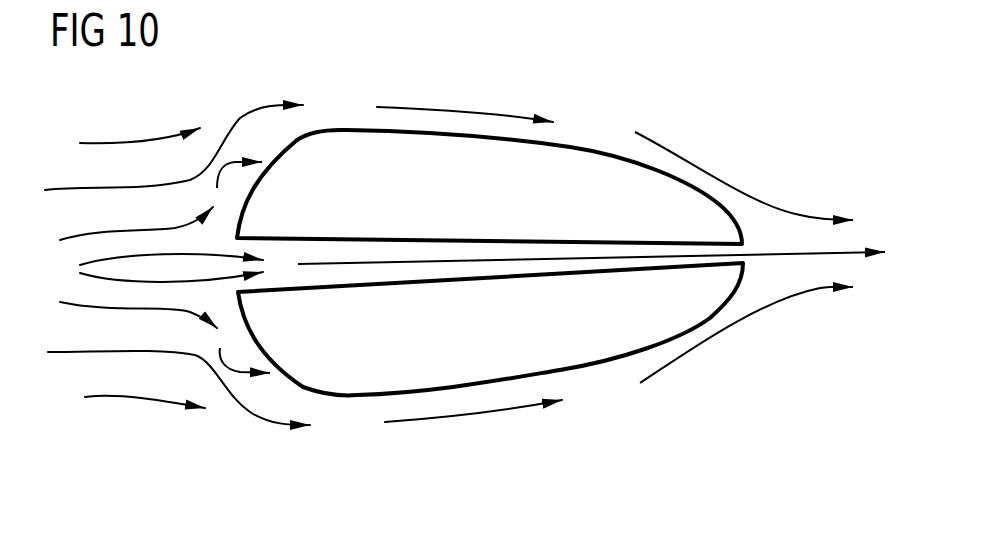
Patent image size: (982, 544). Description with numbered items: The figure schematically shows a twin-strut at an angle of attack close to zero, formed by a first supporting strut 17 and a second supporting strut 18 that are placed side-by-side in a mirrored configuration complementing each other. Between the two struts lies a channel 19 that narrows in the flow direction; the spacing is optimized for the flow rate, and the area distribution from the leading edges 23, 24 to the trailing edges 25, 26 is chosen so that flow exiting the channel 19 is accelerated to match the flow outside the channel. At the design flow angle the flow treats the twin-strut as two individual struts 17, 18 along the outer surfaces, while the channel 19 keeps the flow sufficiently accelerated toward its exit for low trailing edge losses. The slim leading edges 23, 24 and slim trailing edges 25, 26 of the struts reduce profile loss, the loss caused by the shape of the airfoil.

The first supporting strut 17 is at (592, 137).
The second supporting strut 18 is at (592, 382).
The channel 19 is at (292, 278).
The leading edge 23 is at (240, 207).
The leading edge 24 is at (243, 323).
The trailing edge 25 is at (737, 223).
The trailing edge 26 is at (735, 292).